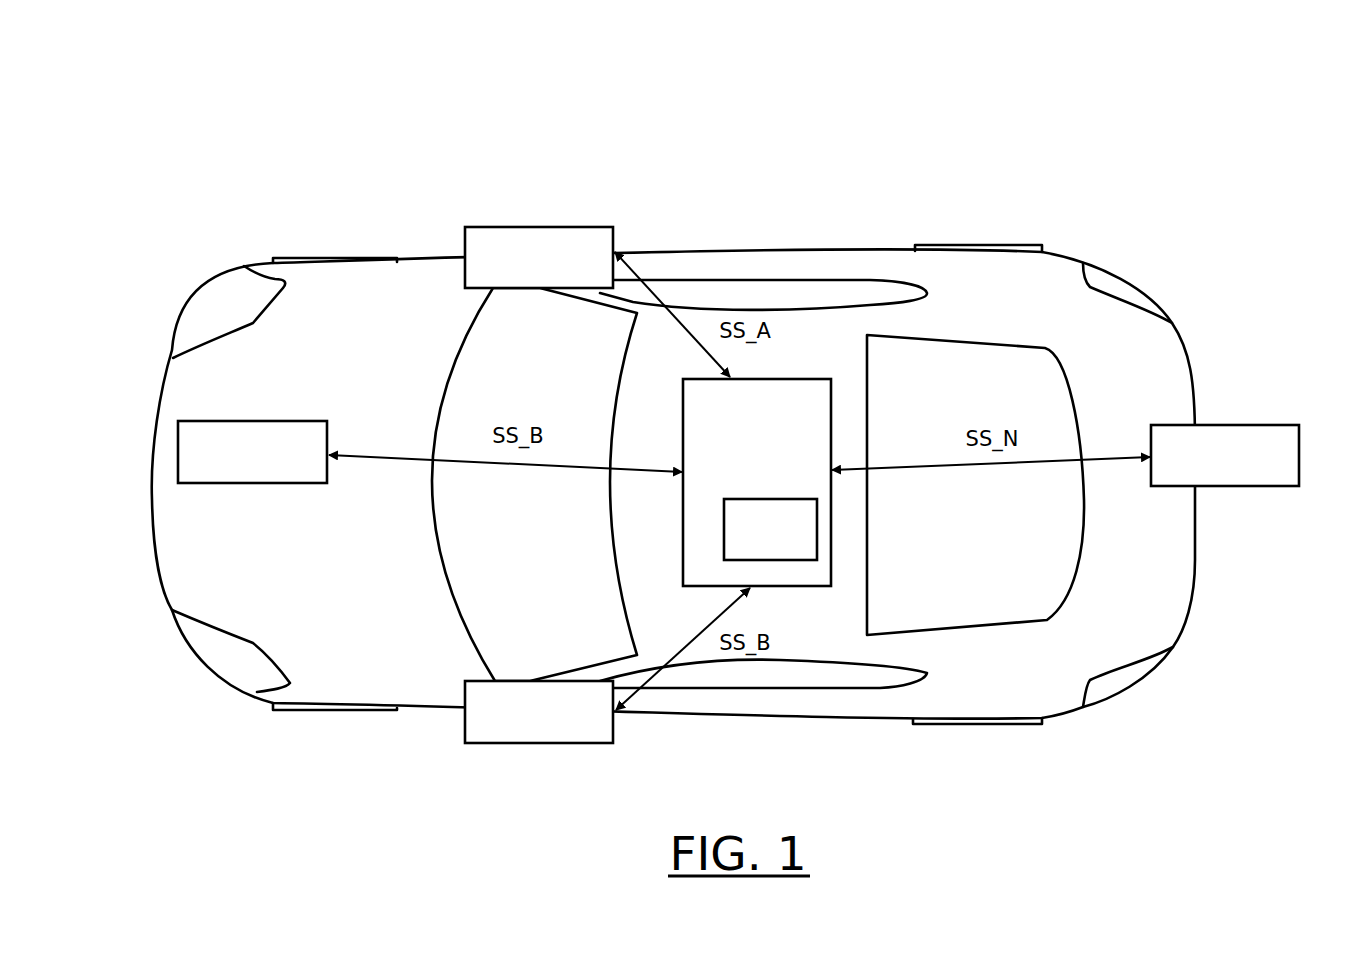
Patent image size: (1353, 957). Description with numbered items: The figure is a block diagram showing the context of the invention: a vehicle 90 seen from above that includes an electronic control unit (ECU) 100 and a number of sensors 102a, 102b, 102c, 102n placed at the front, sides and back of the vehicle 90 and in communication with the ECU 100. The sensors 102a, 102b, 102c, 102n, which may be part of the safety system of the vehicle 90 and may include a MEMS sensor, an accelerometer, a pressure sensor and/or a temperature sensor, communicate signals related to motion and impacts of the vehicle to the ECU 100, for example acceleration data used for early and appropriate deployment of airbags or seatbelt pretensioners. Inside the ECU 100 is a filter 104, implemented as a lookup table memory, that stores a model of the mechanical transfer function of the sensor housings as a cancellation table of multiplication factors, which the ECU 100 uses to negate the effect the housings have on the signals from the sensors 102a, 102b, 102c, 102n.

The vehicle 90 is at (479, 75).
The electronic control unit (ECU) 100 is at (763, 379).
The sensor 102a is at (542, 227).
The sensor 102b is at (240, 483).
The sensor 102c is at (527, 743).
The sensor 102n is at (1255, 425).
The filter 104 is at (773, 499).